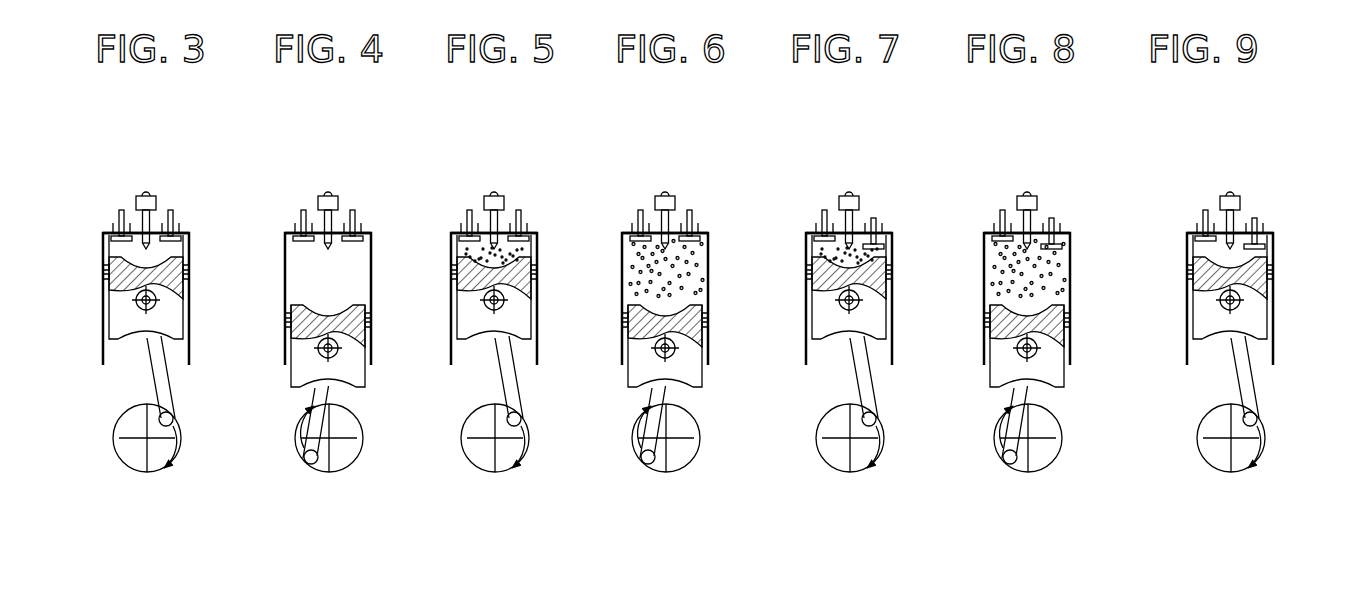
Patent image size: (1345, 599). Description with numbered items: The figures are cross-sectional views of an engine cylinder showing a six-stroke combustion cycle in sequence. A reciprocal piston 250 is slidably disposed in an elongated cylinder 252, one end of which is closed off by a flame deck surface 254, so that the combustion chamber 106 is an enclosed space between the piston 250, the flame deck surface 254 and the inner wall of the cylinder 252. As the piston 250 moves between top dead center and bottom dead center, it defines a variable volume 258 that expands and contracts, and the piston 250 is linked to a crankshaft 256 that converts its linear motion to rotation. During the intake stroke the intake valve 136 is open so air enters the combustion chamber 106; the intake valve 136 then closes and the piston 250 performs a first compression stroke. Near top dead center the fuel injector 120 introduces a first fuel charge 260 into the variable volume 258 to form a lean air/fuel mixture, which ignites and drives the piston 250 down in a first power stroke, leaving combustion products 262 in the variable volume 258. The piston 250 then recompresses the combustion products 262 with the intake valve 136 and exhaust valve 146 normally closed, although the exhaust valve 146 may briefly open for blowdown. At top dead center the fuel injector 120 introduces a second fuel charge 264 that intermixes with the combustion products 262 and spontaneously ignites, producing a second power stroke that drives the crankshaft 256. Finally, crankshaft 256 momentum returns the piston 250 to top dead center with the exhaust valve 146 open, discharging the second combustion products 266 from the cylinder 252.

In FIG. 3, the combustion chamber 106 is at (76, 119).
In FIG. 4, the combustion chamber 106 is at (262, 123).
In FIG. 5, the combustion chamber 106 is at (431, 121).
In FIG. 6, the combustion chamber 106 is at (605, 125).
In FIG. 7, the combustion chamber 106 is at (797, 139).
In FIG. 8, the combustion chamber 106 is at (972, 142).
In FIG. 9, the combustion chamber 106 is at (1178, 144).
In FIG. 3, the fuel injector 120 is at (153, 175).
In FIG. 4, the fuel injector 120 is at (337, 188).
In FIG. 5, the fuel injector 120 is at (502, 187).
In FIG. 6, the fuel injector 120 is at (665, 187).
In FIG. 7, the fuel injector 120 is at (850, 187).
In FIG. 8, the fuel injector 120 is at (1030, 187).
In FIG. 9, the fuel injector 120 is at (1220, 187).
In FIG. 3, the intake valve 136 is at (87, 210).
In FIG. 4, the intake valve 136 is at (275, 196).
In FIG. 7, the intake valve 136 is at (815, 211).
In FIG. 3, the exhaust valve 146 is at (167, 194).
In FIG. 7, the exhaust valve 146 is at (880, 173).
In FIG. 8, the exhaust valve 146 is at (1077, 196).
In FIG. 9, the exhaust valve 146 is at (1260, 174).
In FIG. 3, the piston 250 is at (118, 337).
In FIG. 4, the piston 250 is at (298, 381).
In FIG. 5, the piston 250 is at (481, 337).
In FIG. 6, the piston 250 is at (638, 381).
In FIG. 7, the piston 250 is at (820, 337).
In FIG. 8, the piston 250 is at (997, 381).
In FIG. 9, the piston 250 is at (1201, 337).
In FIG. 3, the cylinder 252 is at (117, 299).
In FIG. 4, the cylinder 252 is at (305, 299).
In FIG. 5, the cylinder 252 is at (473, 299).
In FIG. 6, the cylinder 252 is at (638, 299).
In FIG. 7, the cylinder 252 is at (821, 299).
In FIG. 8, the cylinder 252 is at (1000, 299).
In FIG. 9, the cylinder 252 is at (1201, 299).
In FIG. 3, the flame deck surface 254 is at (166, 180).
In FIG. 4, the flame deck surface 254 is at (343, 197).
In FIG. 5, the flame deck surface 254 is at (508, 192).
In FIG. 6, the flame deck surface 254 is at (677, 190).
In FIG. 7, the flame deck surface 254 is at (874, 189).
In FIG. 8, the flame deck surface 254 is at (1056, 202).
In FIG. 9, the flame deck surface 254 is at (1240, 189).
In FIG. 3, the crankshaft 256 is at (132, 471).
In FIG. 4, the crankshaft 256 is at (329, 471).
In FIG. 5, the crankshaft 256 is at (479, 471).
In FIG. 6, the crankshaft 256 is at (681, 471).
In FIG. 7, the crankshaft 256 is at (837, 471).
In FIG. 8, the crankshaft 256 is at (1008, 471).
In FIG. 9, the crankshaft 256 is at (1217, 471).
In FIG. 3, the variable volume 258 is at (173, 221).
In FIG. 4, the variable volume 258 is at (379, 257).
In FIG. 6, the variable volume 258 is at (719, 237).
In FIG. 7, the variable volume 258 is at (881, 220).
In FIG. 8, the variable volume 258 is at (1074, 235).
In FIG. 9, the variable volume 258 is at (1260, 242).
In FIG. 5, the first fuel charge 260 is at (525, 221).
In FIG. 6, the combustion products 262 is at (693, 291).
In FIG. 7, the combustion products 262 is at (910, 297).
In FIG. 7, the second fuel charge 264 is at (821, 208).
In FIG. 8, the second combustion products 266 is at (1069, 283).